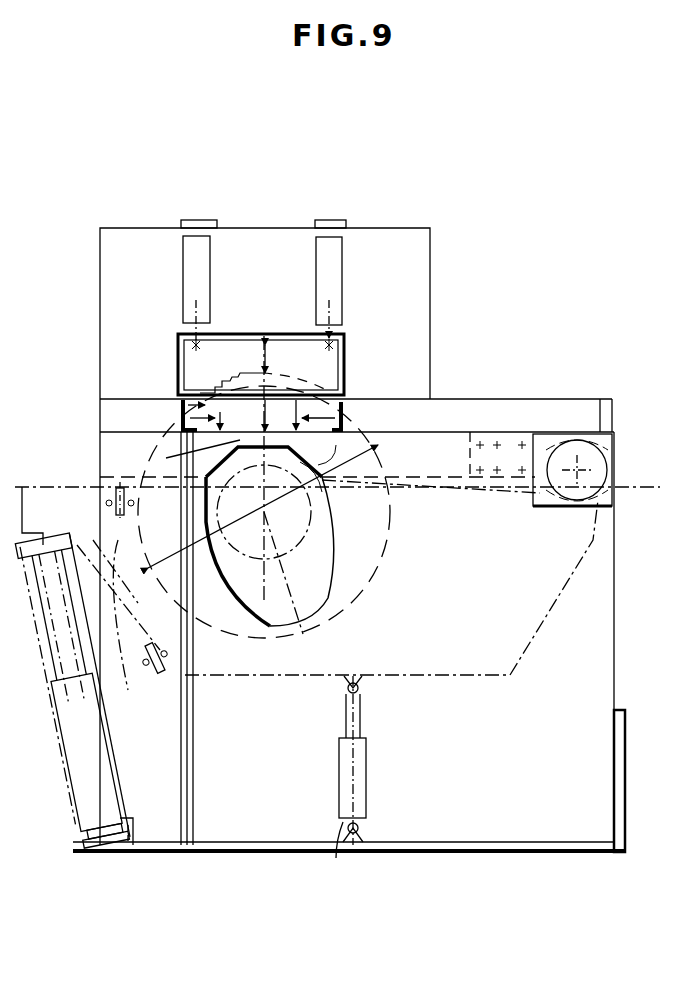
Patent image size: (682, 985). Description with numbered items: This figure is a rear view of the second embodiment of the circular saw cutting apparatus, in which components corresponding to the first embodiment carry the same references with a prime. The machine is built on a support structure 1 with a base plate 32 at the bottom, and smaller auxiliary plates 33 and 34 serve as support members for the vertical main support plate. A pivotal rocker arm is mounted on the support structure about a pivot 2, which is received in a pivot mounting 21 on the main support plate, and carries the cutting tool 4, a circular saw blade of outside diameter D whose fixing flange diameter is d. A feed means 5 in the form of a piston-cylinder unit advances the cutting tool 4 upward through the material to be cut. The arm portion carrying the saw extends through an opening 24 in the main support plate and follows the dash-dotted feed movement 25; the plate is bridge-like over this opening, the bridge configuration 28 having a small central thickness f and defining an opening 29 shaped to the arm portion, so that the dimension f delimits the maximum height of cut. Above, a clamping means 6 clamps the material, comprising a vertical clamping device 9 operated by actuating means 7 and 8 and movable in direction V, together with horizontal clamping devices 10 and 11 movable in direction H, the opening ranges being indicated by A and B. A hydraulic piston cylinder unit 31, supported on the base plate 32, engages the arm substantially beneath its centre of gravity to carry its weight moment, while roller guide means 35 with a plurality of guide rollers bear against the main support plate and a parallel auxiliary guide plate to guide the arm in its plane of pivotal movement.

The support structure 1 is at (452, 856).
The pivot 2 is at (578, 488).
The cutting tool 4 is at (372, 555).
The feed means 5 is at (84, 714).
The clamping means 6 is at (442, 212).
The actuating means 7 is at (192, 295).
The actuating means 8 is at (344, 305).
The vertical clamping device 9 is at (242, 350).
The horizontal clamping device 10 is at (340, 412).
The horizontal clamping device 11 is at (180, 405).
The pivot mounting 21 is at (542, 496).
The opening 24 is at (328, 582).
The feed movement 25 is at (322, 627).
The bridge configuration 28 is at (276, 440).
The opening 29 is at (308, 488).
The hydraulic piston cylinder unit 31 is at (344, 850).
The base plate 32 is at (241, 850).
The auxiliary plate 33 is at (619, 850).
The auxiliary plate 34 is at (134, 848).
The roller guide means 35 is at (112, 503).